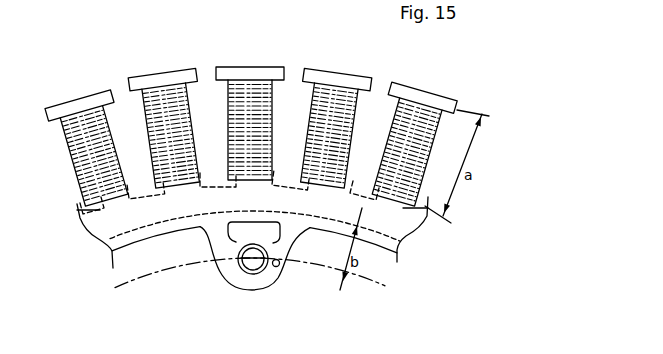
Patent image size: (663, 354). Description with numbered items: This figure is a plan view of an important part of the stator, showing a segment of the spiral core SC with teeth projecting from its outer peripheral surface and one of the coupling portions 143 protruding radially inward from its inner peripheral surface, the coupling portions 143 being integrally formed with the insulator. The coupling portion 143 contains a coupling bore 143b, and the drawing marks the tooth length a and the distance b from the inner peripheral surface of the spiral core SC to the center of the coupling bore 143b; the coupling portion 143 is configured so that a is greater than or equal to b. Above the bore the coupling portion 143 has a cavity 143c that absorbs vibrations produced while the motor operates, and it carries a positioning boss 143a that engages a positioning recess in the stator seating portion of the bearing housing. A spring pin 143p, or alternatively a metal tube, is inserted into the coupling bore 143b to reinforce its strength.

The spiral core SC is at (97, 244).
The coupling portion 143 is at (130, 261).
The positioning boss 143a is at (255, 268).
The coupling bore 143b is at (278, 266).
The cavity 143c is at (232, 243).
The spring pin 143p is at (247, 276).